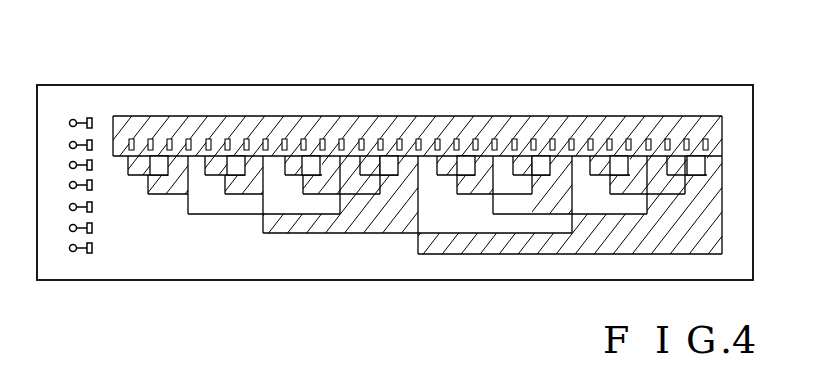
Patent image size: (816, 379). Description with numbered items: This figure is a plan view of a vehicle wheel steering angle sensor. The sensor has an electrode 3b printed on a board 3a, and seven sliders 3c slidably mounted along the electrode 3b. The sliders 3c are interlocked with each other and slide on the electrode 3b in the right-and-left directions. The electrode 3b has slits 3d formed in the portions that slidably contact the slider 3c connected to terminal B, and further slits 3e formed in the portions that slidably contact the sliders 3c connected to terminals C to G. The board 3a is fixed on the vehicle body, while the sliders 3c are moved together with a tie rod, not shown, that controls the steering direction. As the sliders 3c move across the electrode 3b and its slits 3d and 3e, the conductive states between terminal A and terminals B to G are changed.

The board 3a is at (551, 100).
The electrode 3b is at (487, 122).
The sliders 3c is at (89, 255).
The slits 3d is at (131, 139).
The slits 3e is at (158, 170).